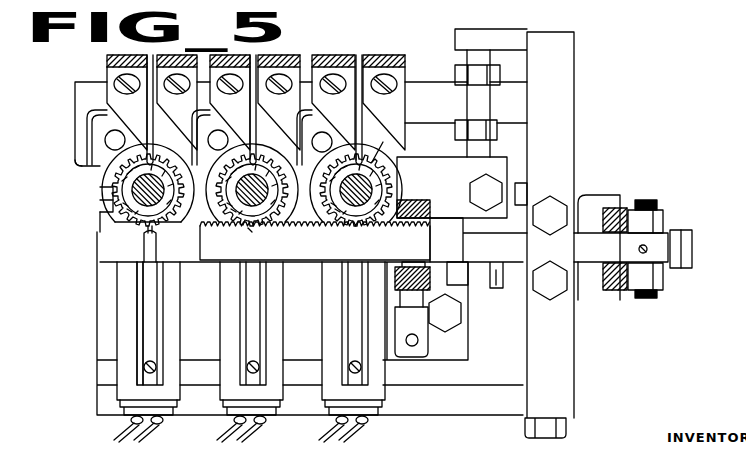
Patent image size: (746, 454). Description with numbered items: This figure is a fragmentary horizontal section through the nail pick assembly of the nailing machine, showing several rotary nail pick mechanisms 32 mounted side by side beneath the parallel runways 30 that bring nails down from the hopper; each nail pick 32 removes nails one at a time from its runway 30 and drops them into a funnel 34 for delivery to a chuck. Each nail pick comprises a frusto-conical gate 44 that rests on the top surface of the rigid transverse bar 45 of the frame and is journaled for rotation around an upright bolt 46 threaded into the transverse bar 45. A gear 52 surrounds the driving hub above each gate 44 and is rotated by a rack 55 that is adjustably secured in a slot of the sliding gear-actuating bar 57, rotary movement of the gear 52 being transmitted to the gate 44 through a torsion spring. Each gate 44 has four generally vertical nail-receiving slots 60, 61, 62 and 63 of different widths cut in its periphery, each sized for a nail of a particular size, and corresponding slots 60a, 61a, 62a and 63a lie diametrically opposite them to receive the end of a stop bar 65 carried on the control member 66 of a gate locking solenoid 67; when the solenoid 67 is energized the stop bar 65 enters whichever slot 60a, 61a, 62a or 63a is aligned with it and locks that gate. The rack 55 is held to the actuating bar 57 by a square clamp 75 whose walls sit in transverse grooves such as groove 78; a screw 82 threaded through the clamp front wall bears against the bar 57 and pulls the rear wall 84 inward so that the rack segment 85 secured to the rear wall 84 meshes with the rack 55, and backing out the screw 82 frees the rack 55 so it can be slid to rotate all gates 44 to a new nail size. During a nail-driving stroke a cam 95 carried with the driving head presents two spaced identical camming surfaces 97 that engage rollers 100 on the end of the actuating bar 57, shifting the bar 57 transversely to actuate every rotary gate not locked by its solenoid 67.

The parallel runways 30 is at (360, 60).
The rotary nail pick mechanism 32 is at (386, 140).
The funnel 34 is at (205, 119).
The frusto-conical gate 44 is at (110, 202).
The transverse bar 45 is at (483, 160).
The upright bolt 46 is at (110, 180).
The gear 52 is at (315, 241).
The rack 55 is at (249, 229).
The gear-actuating bar 57 is at (312, 250).
The nail-receiving slot 60 is at (358, 150).
The stop bar slot 60a is at (118, 233).
The nail-receiving slot 61 is at (399, 153).
The stop bar slot 61a is at (118, 222).
The nail-receiving slot 62 is at (395, 193).
The stop bar slot 62a is at (100, 188).
The nail-receiving slot 63 is at (174, 226).
The stop bar slot 63a is at (110, 167).
The stop bar 65 is at (145, 263).
The control member 66 is at (137, 284).
The gate locking solenoid 67 is at (115, 299).
The square clamp 75 is at (434, 268).
The groove 78 is at (432, 252).
The screw 82 is at (417, 355).
The rear wall 84 is at (425, 202).
The rack segment 85 is at (431, 218).
The cam 95 is at (608, 208).
The camming surfaces 97 is at (641, 200).
The rollers 100 is at (688, 278).